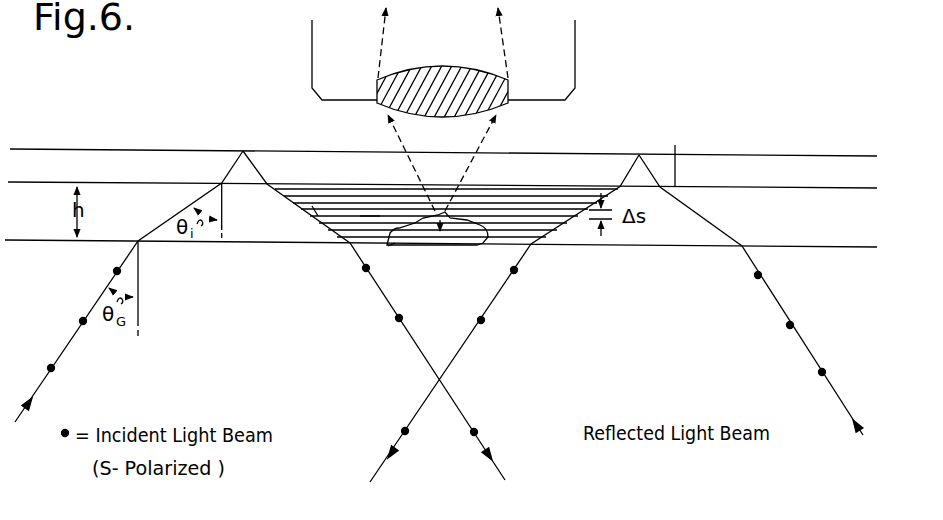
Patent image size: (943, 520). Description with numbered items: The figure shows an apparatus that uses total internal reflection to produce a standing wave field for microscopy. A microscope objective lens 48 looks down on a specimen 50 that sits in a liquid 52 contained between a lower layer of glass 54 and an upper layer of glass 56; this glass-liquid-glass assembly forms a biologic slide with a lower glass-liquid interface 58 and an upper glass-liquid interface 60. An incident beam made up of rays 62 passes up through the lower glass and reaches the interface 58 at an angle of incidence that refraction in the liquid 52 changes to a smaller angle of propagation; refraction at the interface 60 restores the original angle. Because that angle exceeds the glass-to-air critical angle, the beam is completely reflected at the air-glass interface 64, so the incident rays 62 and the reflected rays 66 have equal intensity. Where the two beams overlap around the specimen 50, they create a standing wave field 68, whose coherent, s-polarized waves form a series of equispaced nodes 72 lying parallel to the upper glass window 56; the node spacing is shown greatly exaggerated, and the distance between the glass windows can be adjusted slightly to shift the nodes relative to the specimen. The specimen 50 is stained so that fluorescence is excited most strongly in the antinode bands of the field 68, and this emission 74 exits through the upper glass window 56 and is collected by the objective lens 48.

The microscope objective lens 48 is at (437, 68).
The fluorescence emission 74 is at (479, 132).
The upper glass-liquid interface 60 is at (675, 145).
The air-glass interface 64 is at (723, 155).
The upper layer of glass 56 is at (730, 183).
The liquid 52 is at (775, 228).
The lower layer of glass 54 is at (867, 303).
The nodes 72 is at (323, 204).
The standing wave field 68 is at (370, 224).
The lower glass-liquid interface 58 is at (390, 250).
The specimen 50 is at (464, 240).
The incident beam rays 62 is at (62, 353).
The reflected beam rays 66 is at (484, 444).